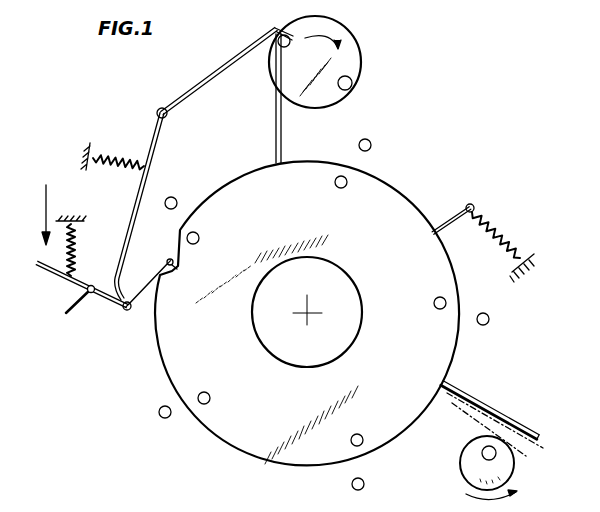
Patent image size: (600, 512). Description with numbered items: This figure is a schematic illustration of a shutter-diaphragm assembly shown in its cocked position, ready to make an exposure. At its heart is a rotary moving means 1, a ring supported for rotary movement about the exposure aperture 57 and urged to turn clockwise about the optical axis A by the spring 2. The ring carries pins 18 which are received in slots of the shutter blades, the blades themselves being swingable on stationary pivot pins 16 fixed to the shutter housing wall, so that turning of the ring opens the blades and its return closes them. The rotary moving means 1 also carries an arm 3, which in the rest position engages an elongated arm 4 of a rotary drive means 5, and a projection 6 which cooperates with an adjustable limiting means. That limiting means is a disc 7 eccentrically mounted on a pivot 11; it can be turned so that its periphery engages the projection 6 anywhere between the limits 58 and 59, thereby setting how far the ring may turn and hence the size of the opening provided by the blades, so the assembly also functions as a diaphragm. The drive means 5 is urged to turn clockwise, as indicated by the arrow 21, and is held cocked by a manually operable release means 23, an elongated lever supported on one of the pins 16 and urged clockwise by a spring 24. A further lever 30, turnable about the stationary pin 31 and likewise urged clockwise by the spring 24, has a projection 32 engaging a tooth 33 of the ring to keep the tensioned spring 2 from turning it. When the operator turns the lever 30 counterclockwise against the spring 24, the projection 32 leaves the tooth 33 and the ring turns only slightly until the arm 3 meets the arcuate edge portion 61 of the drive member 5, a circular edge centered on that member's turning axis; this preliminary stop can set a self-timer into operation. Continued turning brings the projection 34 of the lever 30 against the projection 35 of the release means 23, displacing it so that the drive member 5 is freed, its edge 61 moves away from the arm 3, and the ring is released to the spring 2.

The rotary moving means 1 is at (393, 199).
The spring 2 is at (505, 238).
The arm 3 is at (276, 121).
The elongated arm 4 is at (352, 84).
The rotary drive means 5 is at (361, 57).
The projection 6 is at (511, 422).
The disc 7 is at (462, 471).
The pivot 11 is at (482, 451).
The pivot pins 16 is at (158, 110).
The pins 18 is at (199, 238).
The arrow 21 is at (349, 31).
The manually operable release means 23 is at (222, 68).
The spring 24 is at (120, 156).
The lever 30 is at (48, 268).
The stationary pin 31 is at (127, 311).
The projection 32 is at (166, 258).
The tooth 33 is at (178, 270).
The projection 34 is at (92, 284).
The projection 35 is at (79, 310).
The exposure aperture 57 is at (358, 282).
The limit 58 is at (528, 460).
The limit 59 is at (545, 448).
The arcuate edge portion 61 is at (288, 47).
The optical axis A is at (306, 313).